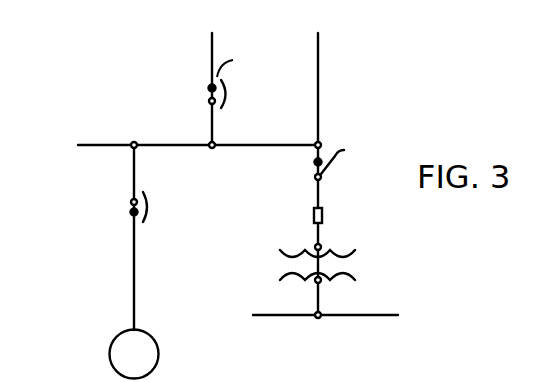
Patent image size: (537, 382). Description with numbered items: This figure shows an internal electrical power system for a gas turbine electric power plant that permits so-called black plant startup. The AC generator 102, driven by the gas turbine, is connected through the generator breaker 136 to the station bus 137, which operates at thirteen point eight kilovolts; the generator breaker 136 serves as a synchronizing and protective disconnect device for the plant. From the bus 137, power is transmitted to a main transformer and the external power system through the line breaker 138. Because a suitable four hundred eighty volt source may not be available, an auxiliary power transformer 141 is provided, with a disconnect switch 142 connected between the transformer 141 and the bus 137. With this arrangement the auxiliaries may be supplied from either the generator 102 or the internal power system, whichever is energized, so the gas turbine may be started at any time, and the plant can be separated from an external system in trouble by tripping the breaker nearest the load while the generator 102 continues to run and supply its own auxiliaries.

The AC generator 102 is at (110, 348).
The generator breaker 136 is at (136, 227).
The 13.8 KV bus 137 is at (112, 147).
The line breaker 138 is at (207, 95).
The auxiliary power transformer 141 is at (323, 253).
The disconnect switch 142 is at (345, 153).